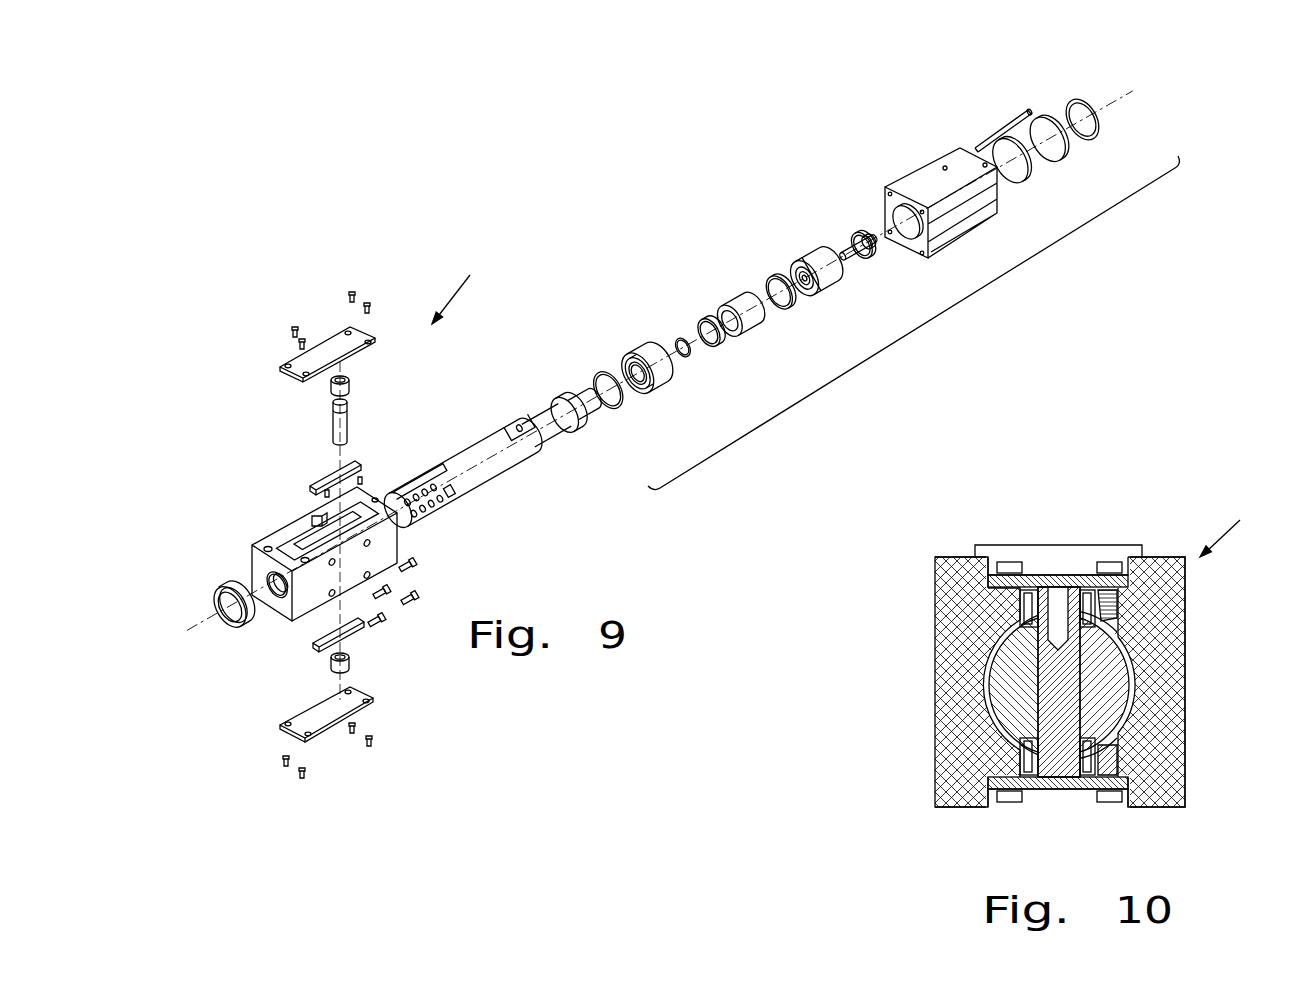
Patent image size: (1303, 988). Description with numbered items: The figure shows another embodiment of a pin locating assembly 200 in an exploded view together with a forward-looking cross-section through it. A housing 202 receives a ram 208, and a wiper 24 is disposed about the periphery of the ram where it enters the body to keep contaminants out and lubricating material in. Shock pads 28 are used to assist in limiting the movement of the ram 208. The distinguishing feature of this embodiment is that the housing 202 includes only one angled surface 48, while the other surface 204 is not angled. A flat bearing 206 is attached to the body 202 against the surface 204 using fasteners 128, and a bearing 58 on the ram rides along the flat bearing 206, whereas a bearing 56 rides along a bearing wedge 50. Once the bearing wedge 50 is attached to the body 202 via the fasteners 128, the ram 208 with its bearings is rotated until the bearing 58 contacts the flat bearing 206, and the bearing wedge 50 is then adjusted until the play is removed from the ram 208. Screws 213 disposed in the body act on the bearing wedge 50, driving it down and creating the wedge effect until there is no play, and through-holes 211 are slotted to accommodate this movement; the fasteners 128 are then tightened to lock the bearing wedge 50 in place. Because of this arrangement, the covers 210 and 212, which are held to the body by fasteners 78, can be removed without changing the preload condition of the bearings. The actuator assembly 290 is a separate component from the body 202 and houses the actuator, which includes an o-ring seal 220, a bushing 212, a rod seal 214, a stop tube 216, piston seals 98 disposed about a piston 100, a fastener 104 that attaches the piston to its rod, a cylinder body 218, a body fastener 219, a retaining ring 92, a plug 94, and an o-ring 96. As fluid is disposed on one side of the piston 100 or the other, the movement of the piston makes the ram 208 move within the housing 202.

In FIG. 9, the wiper 24 is at (232, 592).
In FIG. 9, the shock pad 28 is at (563, 405).
In FIG. 10, the angled surface 48 is at (1125, 643).
In FIG. 9, the bearing wedge 50 is at (330, 470).
In FIG. 10, the bearing wedge 50 is at (1112, 606).
In FIG. 9, the bearing 56 is at (352, 388).
In FIG. 10, the bearing 56 is at (1085, 590).
In FIG. 9, the bearing 58 is at (332, 672).
In FIG. 10, the bearing 58 is at (1088, 775).
In FIG. 9, the fasteners 78 is at (300, 345).
In FIG. 10, the fasteners 78 is at (1008, 568).
In FIG. 9, the retaining ring 92 is at (1098, 127).
In FIG. 9, the plug 94 is at (1065, 155).
In FIG. 9, the o-ring 96 is at (1015, 180).
In FIG. 9, the piston seal 98 is at (790, 310).
In FIG. 9, the piston 100 is at (806, 255).
In FIG. 9, the fastener 104 is at (855, 235).
In FIG. 9, the fasteners 128 is at (395, 622).
In FIG. 9, the pin locating assembly 200 is at (462, 283).
In FIG. 10, the pin locating assembly 200 is at (1237, 525).
In FIG. 9, the housing 202 is at (312, 610).
In FIG. 10, the housing 202 is at (1180, 675).
In FIG. 10, the surface 204 is at (1110, 725).
In FIG. 9, the flat bearing 206 is at (355, 635).
In FIG. 10, the flat bearing 206 is at (1110, 758).
In FIG. 9, the ram 208 is at (470, 455).
In FIG. 10, the ram 208 is at (1000, 678).
In FIG. 9, the cover 210 is at (330, 340).
In FIG. 10, the cover 210 is at (1055, 545).
In FIG. 9, the through-holes 211 is at (335, 563).
In FIG. 9, the cover 212 is at (648, 345).
In FIG. 10, the cover 212 is at (1065, 790).
In FIG. 9, the screws 213 is at (330, 490).
In FIG. 9, the rod seal 214 is at (690, 360).
In FIG. 9, the stop tube 216 is at (736, 305).
In FIG. 9, the cylinder body 218 is at (937, 185).
In FIG. 9, the body fastener 219 is at (1020, 125).
In FIG. 9, the o-ring seal 220 is at (620, 405).
In FIG. 9, the actuator assembly 290 is at (930, 325).